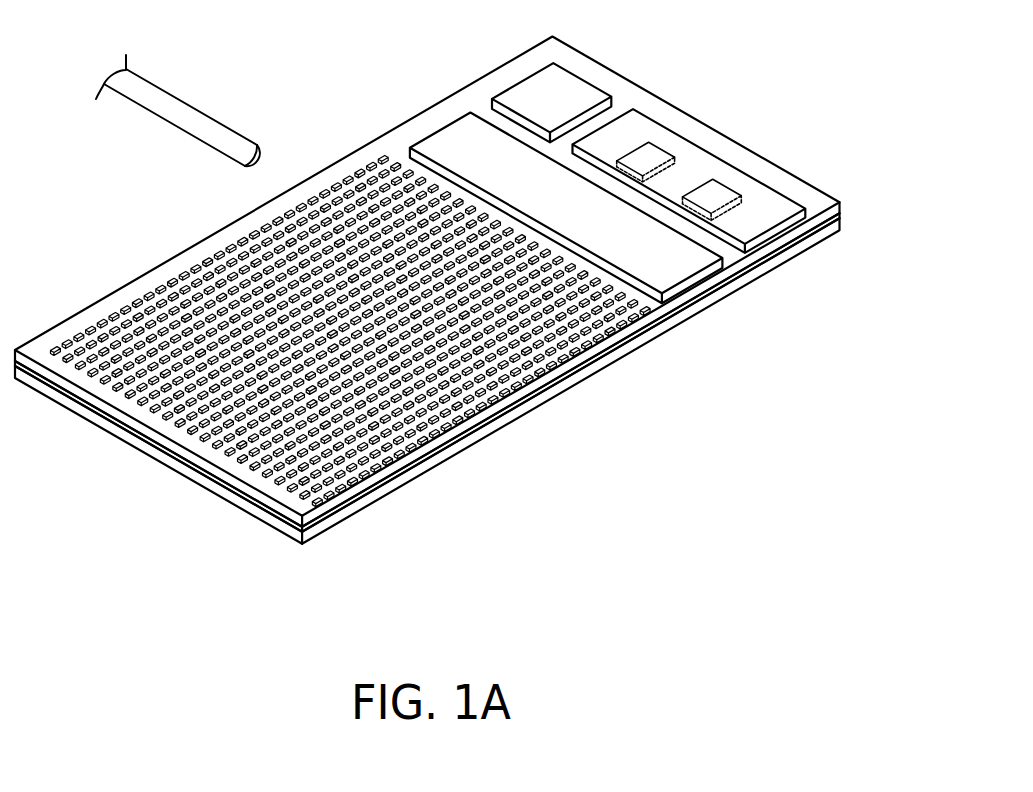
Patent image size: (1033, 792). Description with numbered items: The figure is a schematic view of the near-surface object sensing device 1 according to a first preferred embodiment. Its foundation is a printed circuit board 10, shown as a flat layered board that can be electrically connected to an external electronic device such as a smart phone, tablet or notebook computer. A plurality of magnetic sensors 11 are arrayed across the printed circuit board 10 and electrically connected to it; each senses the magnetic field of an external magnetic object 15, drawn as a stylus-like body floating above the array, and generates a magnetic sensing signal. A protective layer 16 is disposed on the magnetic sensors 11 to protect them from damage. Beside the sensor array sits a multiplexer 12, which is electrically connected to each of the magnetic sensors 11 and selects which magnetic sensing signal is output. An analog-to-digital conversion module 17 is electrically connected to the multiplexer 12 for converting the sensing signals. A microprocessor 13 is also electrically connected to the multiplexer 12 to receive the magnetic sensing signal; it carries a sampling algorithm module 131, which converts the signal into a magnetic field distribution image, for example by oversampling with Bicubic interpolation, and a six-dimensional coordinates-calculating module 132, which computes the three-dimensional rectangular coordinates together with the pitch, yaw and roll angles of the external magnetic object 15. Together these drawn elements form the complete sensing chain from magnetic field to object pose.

The near-surface object sensing device 1 is at (610, 380).
The printed circuit board 10 is at (518, 415).
The magnetic sensors 11 is at (370, 173).
The multiplexer 12 is at (465, 135).
The microprocessor 13 is at (783, 207).
The sampling algorithm module 131 is at (715, 193).
The six-dimensional coordinates-calculating module 132 is at (652, 148).
The external magnetic object 15 is at (168, 103).
The protective layer 16 is at (840, 216).
The analog-to-digital conversion module 17 is at (568, 90).